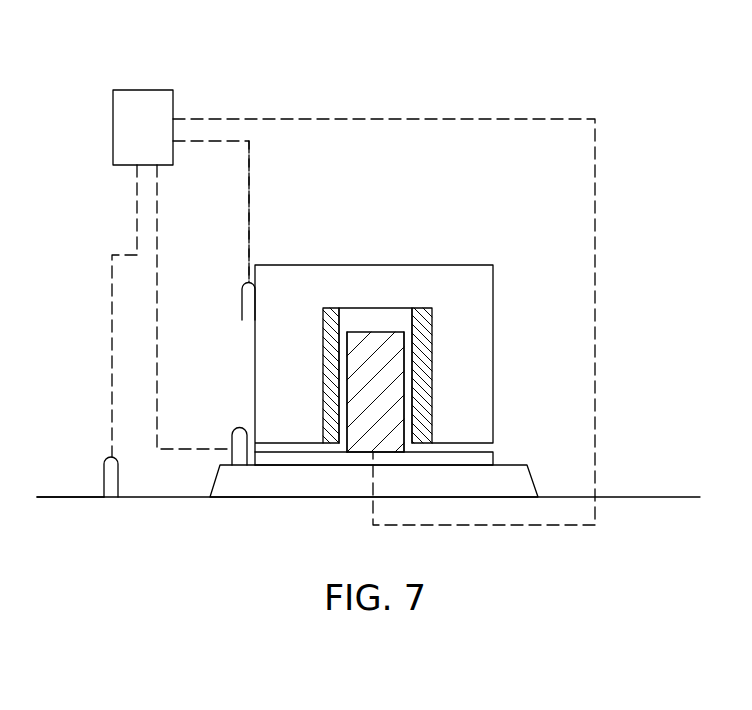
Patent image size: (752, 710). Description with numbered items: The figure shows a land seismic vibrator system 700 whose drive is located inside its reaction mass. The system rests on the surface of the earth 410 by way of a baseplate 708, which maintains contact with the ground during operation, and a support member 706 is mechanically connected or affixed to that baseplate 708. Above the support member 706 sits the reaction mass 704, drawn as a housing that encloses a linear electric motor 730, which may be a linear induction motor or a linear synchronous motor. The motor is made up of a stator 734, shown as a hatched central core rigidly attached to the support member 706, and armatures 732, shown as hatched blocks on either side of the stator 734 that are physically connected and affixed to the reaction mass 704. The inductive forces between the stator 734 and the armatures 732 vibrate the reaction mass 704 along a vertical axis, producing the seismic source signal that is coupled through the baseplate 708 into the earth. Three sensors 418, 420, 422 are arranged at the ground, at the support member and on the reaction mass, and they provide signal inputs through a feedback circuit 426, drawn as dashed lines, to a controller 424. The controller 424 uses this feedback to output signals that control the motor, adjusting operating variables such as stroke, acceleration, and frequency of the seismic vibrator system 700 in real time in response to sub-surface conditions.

The seismic vibrator system 700 is at (553, 95).
The controller 424 is at (140, 90).
The feedback circuit 426 is at (249, 178).
The reaction mass 704 is at (493, 300).
The support member 706 is at (493, 457).
The baseplate 708 is at (538, 478).
The armatures 732 is at (322, 352).
The linear electric motor 730 is at (403, 308).
The stator 734 is at (350, 330).
The sensor 422 is at (240, 304).
The sensor 420 is at (232, 440).
The sensor 418 is at (118, 478).
The surface of the earth 410 is at (53, 497).